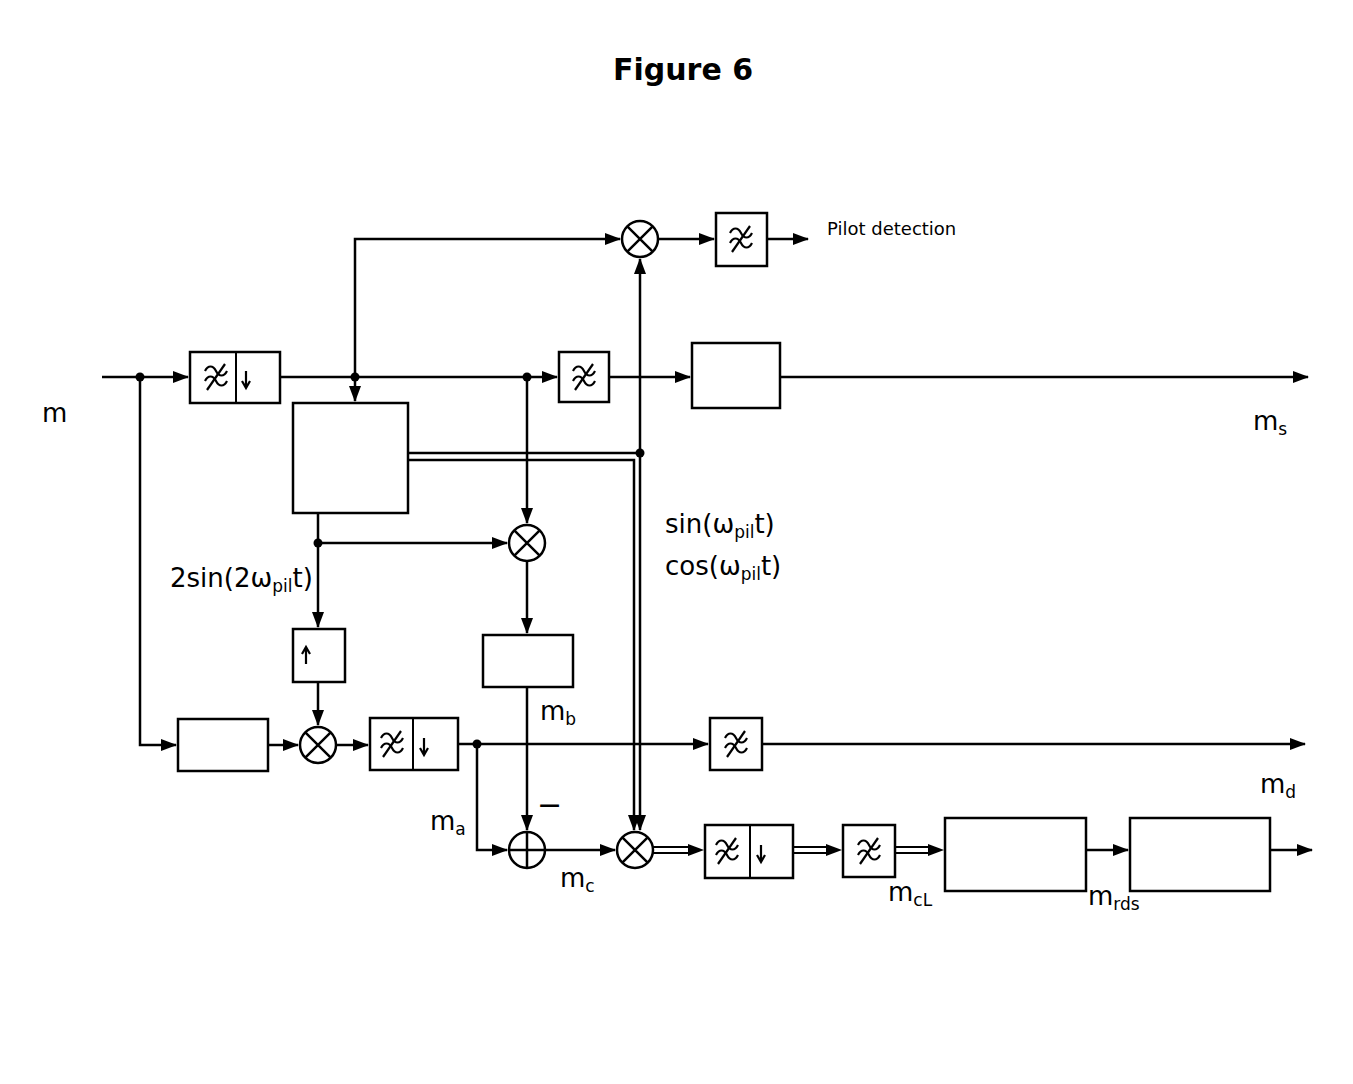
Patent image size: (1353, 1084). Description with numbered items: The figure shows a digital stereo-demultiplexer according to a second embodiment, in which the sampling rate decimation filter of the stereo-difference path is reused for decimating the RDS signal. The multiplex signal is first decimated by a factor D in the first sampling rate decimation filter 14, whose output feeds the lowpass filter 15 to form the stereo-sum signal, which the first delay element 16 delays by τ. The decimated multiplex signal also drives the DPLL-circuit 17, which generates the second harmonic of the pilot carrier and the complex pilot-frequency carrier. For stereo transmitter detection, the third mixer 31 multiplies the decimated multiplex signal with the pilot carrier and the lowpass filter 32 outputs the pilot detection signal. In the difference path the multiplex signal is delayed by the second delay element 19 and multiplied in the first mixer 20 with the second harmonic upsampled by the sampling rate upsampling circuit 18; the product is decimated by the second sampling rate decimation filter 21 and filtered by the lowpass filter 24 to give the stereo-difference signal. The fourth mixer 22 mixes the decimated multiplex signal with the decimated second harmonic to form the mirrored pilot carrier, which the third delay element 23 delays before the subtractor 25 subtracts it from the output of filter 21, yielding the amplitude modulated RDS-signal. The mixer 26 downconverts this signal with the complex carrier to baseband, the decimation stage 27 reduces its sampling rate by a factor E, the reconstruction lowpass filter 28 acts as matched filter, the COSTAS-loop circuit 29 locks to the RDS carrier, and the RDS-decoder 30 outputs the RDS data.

The first sampling rate decimation filter 14 is at (210, 352).
The lowpass filter 15 is at (573, 350).
The first delay element 16 is at (732, 343).
The DPLL-circuit 17 is at (413, 442).
The sampling rate upsampling circuit 18 is at (347, 630).
The second delay element 19 is at (192, 717).
The first mixer 20 is at (321, 765).
The second sampling rate decimation filter 21 is at (383, 715).
The fourth mixer (second modulator) 22 is at (542, 537).
The third delay element 23 is at (560, 633).
The lowpass filter 24 is at (732, 718).
The subtractor 25 is at (545, 840).
The fourth mixer (fifth mixer) 26 is at (650, 836).
The low-pass filter and decimator 27 is at (755, 825).
The reconstruction lowpass filter 28 is at (870, 825).
The COSTAS-loop circuit 29 is at (990, 818).
The RDS-decoder 30 is at (1163, 818).
The third mixer 31 is at (646, 222).
The lowpass filter 32 is at (753, 212).